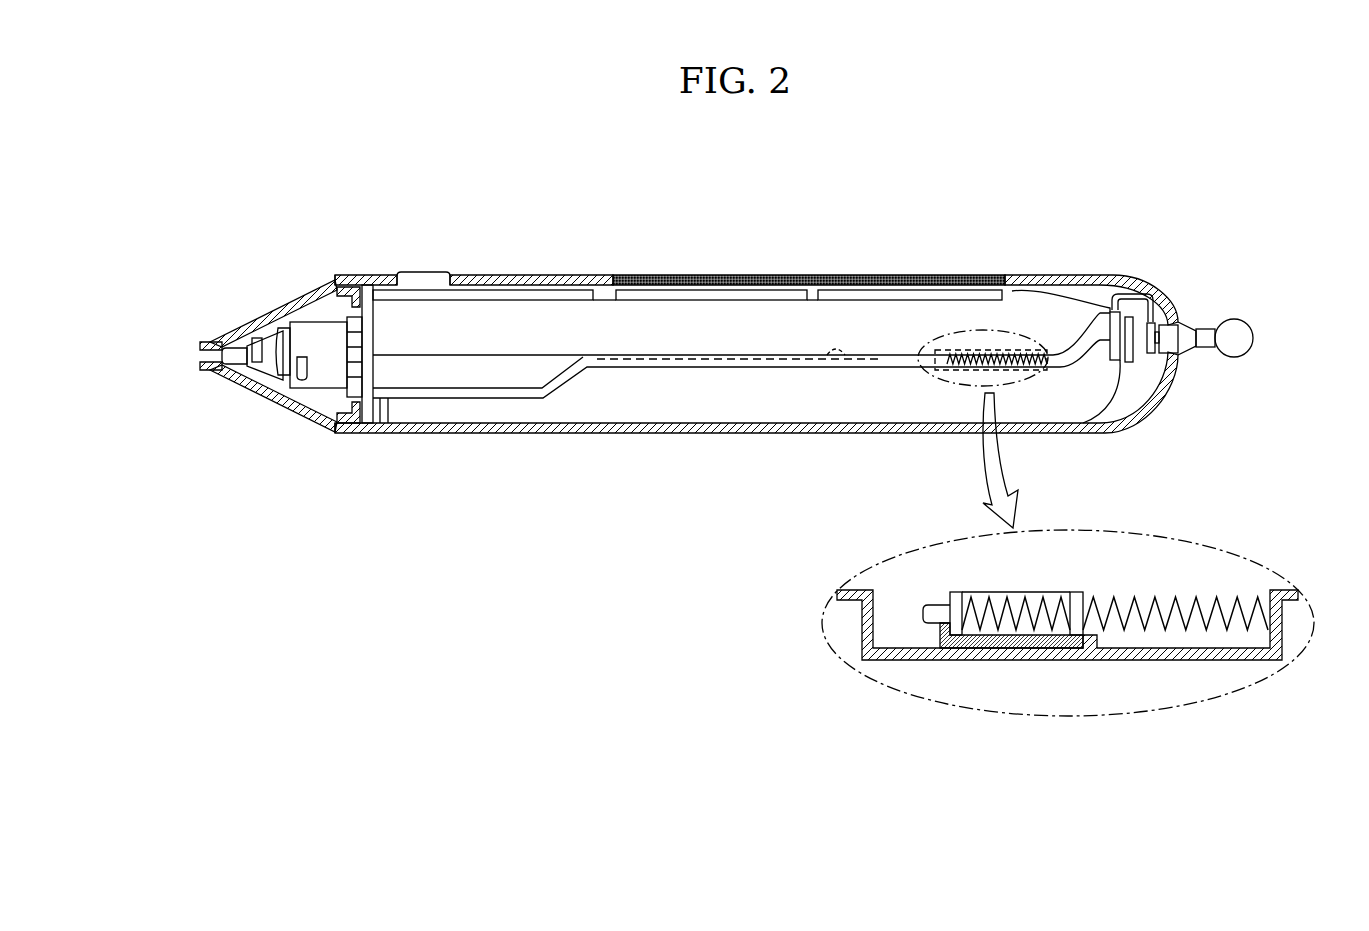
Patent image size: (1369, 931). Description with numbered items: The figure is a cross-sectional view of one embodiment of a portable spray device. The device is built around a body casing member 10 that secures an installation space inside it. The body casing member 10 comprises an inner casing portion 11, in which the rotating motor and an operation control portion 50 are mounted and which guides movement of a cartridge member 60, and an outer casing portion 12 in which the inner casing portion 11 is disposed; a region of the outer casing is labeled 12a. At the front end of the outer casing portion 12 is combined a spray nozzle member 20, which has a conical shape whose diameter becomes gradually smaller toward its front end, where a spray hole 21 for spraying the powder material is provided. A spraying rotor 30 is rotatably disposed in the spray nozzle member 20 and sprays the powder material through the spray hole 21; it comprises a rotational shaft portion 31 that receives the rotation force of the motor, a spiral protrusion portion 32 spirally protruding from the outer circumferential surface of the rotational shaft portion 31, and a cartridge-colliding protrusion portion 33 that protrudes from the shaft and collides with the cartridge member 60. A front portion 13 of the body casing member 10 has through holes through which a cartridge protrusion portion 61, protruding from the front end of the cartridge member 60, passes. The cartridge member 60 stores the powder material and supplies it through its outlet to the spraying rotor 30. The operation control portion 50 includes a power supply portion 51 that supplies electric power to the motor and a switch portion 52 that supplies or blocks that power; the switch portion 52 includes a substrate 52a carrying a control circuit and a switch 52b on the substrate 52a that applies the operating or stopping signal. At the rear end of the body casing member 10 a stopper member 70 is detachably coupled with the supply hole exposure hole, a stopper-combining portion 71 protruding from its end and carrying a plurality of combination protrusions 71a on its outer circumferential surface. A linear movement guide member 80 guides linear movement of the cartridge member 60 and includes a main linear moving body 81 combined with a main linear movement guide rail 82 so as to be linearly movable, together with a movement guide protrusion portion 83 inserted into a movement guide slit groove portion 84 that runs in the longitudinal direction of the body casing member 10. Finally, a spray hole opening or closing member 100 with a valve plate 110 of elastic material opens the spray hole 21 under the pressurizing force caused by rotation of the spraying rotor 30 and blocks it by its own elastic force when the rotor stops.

The body casing member 10 is at (1013, 218).
The inner casing portion 11 is at (967, 305).
The outer casing portion 12 is at (1025, 275).
The housing window portion 12a is at (893, 275).
The front portion 13 is at (372, 320).
The spray nozzle member 20 is at (247, 320).
The spray hole 21 is at (200, 355).
The spraying rotor 30 is at (345, 222).
The rotational shaft portion 31 is at (303, 335).
The spiral protrusion portion 32 is at (284, 332).
The cartridge-colliding protrusion portion 33 is at (352, 320).
The operation control portion 50 is at (607, 183).
The power supply portion 51 is at (635, 295).
The switch portion 52 is at (497, 220).
The substrate 52a is at (502, 290).
The switch 52b is at (432, 275).
The cartridge member 60 is at (581, 410).
The cartridge protrusion portion 61 is at (327, 423).
The stopper member 70 is at (1255, 340).
The stopper-combining portion 71 is at (1164, 348).
The combination protrusion 71a is at (1150, 355).
The linear movement guide member 80 is at (797, 484).
The main linear moving body 81 is at (960, 385).
The main linear movement guide rail 82 is at (942, 378).
The movement guide protrusion portion 83 is at (783, 362).
The movement guide slit groove portion 84 is at (845, 357).
The spray hole opening or closing member 100 is at (254, 381).
The valve plate 110 is at (232, 360).